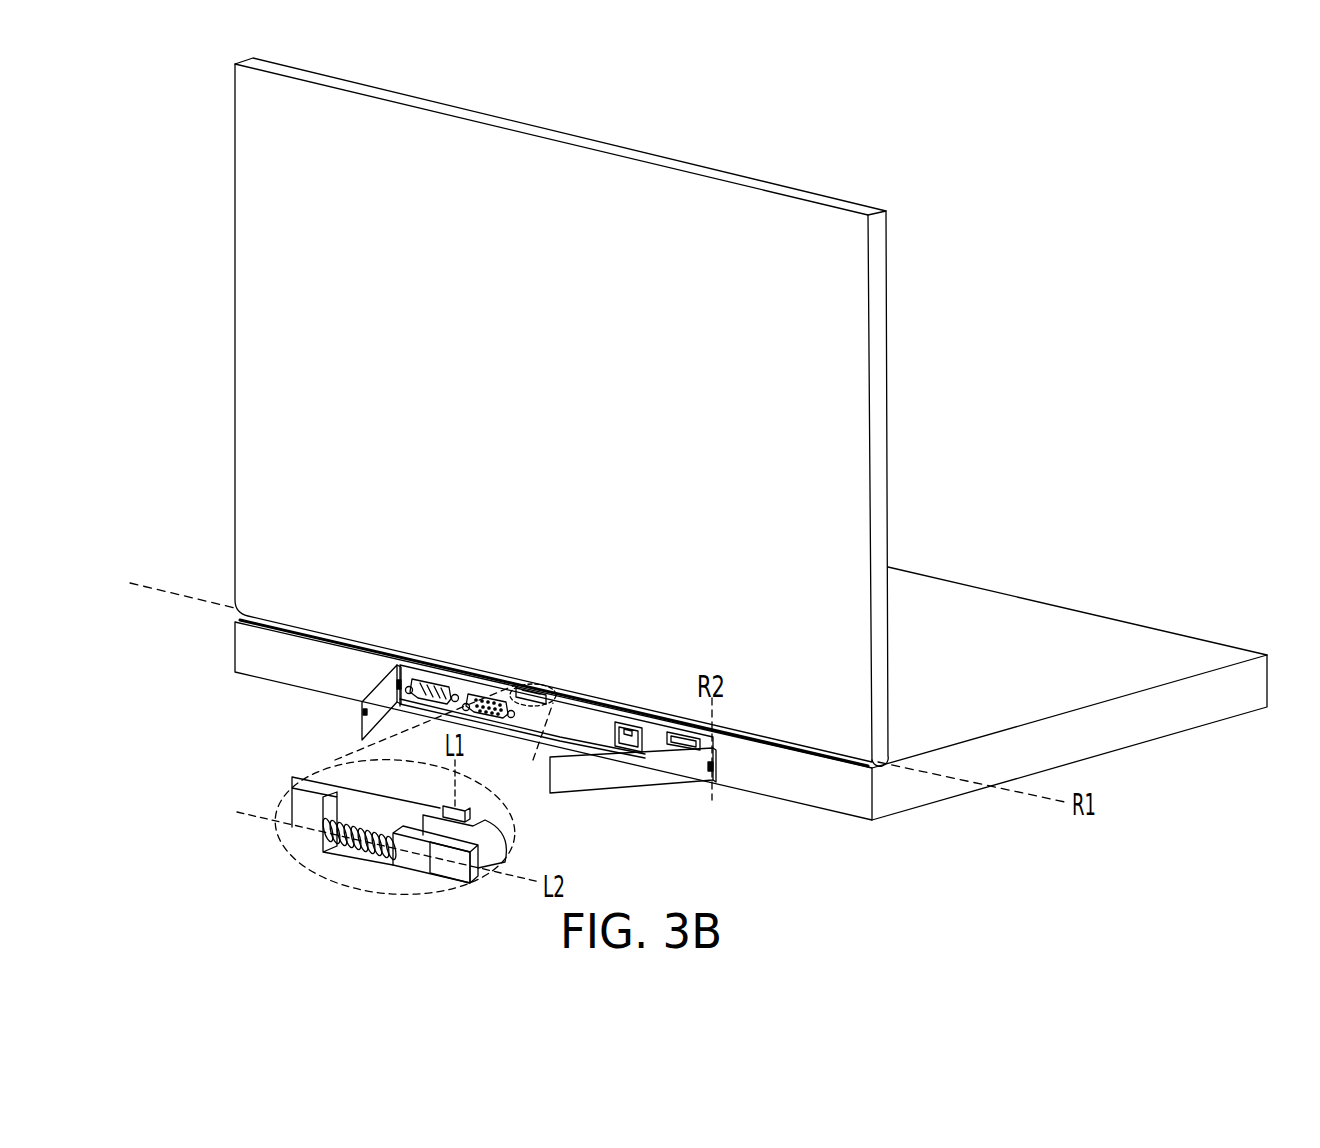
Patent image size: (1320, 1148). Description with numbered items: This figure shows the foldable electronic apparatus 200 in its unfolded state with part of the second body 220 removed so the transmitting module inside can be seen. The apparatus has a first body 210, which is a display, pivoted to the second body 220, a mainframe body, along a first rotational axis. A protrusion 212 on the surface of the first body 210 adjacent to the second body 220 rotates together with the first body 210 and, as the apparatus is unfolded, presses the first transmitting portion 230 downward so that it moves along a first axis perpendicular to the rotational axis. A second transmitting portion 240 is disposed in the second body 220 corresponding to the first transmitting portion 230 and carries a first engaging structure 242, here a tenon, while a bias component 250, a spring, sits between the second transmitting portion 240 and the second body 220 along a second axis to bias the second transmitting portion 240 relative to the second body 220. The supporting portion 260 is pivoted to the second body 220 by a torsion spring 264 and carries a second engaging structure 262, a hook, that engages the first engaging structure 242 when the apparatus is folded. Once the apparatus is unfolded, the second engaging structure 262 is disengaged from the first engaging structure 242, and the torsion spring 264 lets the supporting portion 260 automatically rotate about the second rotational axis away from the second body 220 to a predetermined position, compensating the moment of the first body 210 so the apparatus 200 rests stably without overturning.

The foldable electronic apparatus 200 is at (1256, 868).
The first body 210 is at (245, 518).
The protrusion 212 is at (480, 813).
The second body 220 is at (282, 808).
The first transmitting portion 230 is at (510, 856).
The second transmitting portion 240 is at (403, 862).
The first engaging structure 242 is at (450, 872).
The bias component 250 is at (297, 837).
The supporting portion 260 is at (364, 730).
The second engaging structure 262 is at (363, 712).
The torsion spring 264 is at (712, 768).